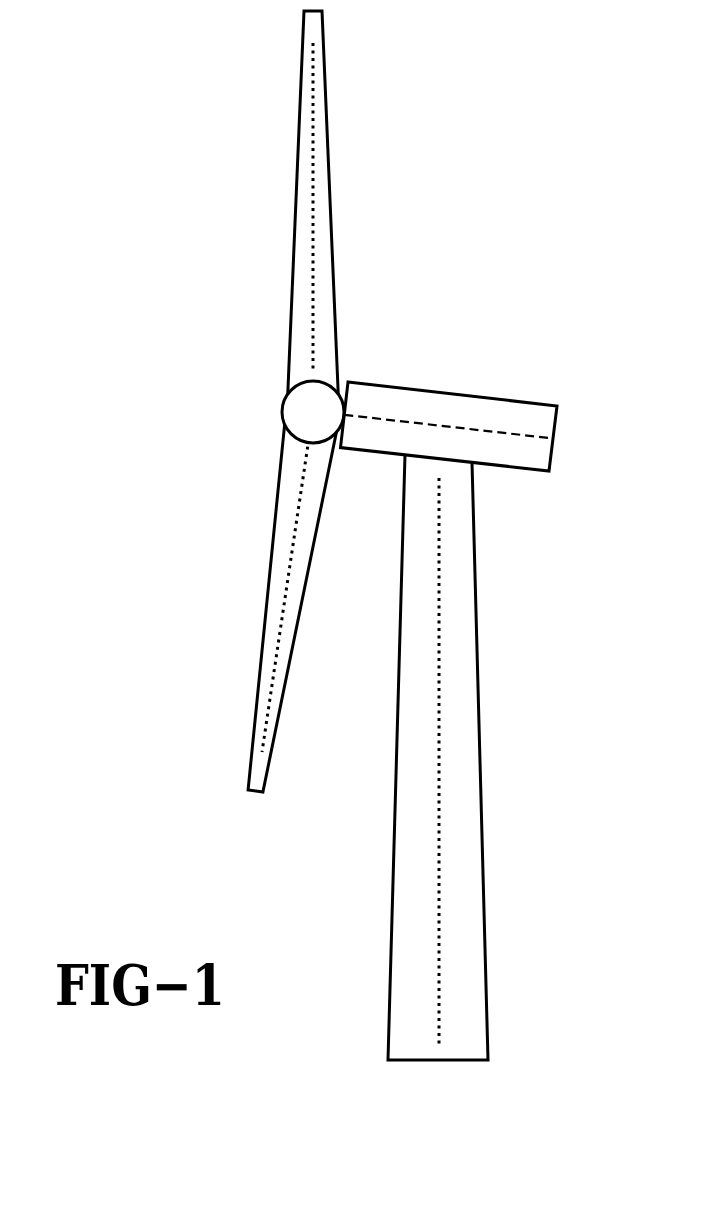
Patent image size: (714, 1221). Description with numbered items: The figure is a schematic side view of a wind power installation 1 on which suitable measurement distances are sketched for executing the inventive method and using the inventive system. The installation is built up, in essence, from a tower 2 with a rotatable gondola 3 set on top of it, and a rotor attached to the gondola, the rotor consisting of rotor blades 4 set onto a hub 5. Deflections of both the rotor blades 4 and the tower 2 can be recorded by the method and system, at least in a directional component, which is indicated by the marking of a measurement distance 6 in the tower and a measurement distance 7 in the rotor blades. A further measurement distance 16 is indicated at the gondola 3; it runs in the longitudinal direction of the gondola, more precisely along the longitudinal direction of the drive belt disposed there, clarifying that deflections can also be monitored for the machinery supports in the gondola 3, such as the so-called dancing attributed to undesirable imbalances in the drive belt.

The wind power installation 1 is at (417, 535).
The tower 2 is at (468, 770).
The gondola 3 is at (518, 415).
The rotor blades 4 is at (330, 160).
The hub 5 is at (282, 407).
The measurement distance 6 is at (440, 612).
The measurement distance 7 is at (313, 232).
The measurement distance 16 is at (448, 428).